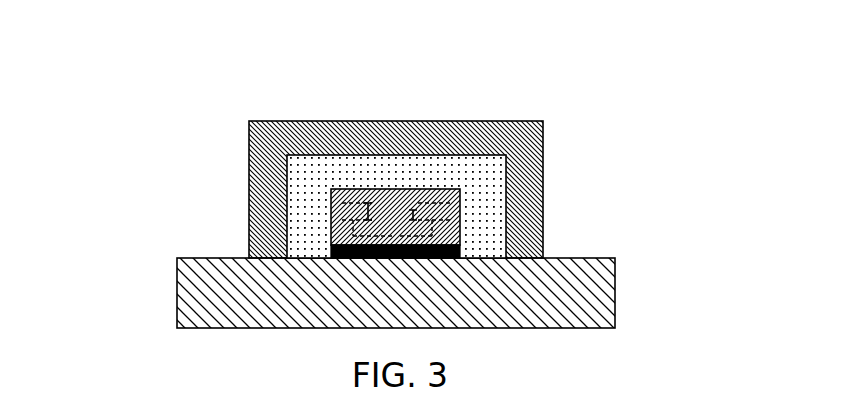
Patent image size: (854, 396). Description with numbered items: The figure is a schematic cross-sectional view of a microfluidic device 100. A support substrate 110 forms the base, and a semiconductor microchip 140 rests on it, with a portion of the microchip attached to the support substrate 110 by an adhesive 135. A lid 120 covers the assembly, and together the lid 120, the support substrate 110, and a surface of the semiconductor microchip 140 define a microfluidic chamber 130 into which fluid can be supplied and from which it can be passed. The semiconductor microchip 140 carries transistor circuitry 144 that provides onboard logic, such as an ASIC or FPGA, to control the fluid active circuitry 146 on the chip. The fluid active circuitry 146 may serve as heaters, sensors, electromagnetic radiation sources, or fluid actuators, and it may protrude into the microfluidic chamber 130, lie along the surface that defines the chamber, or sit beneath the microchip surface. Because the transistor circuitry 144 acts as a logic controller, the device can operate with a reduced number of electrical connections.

The microfluidic device 100 is at (229, 62).
The support substrate 110 is at (223, 293).
The lid 120 is at (518, 135).
The microfluidic chamber 130 is at (488, 176).
The adhesive 135 is at (460, 253).
The semiconductor microchip 140 is at (458, 220).
The transistor circuitry 144 is at (396, 218).
The fluid active circuitry 146 is at (357, 198).